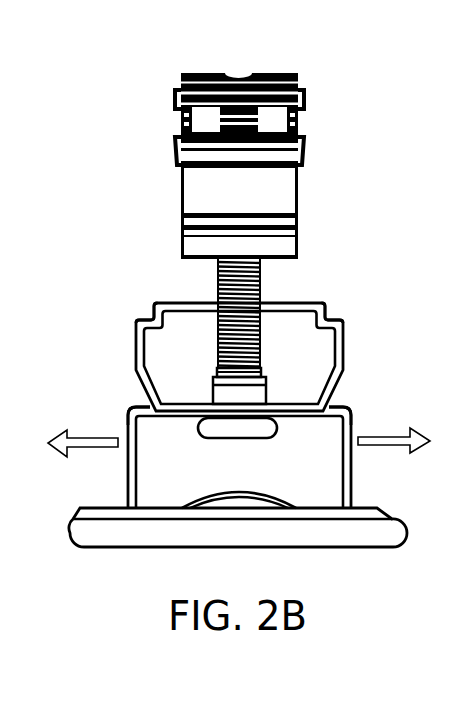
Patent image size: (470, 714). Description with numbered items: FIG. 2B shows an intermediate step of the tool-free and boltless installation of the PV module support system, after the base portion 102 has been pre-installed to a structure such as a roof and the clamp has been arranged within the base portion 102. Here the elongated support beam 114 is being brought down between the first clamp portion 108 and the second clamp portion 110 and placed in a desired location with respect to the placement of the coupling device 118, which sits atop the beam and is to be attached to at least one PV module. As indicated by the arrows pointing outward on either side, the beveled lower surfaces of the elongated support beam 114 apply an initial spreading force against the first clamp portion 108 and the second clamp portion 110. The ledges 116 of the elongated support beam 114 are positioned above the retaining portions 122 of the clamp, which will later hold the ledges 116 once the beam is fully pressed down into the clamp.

The base portion 102 is at (412, 527).
The first clamp portion 108 is at (128, 466).
The second clamp portion 110 is at (353, 452).
The elongated support beam 114 is at (350, 352).
The ledges 116 is at (146, 320).
The coupling device 118 is at (322, 123).
The retaining portions 122 is at (146, 405).